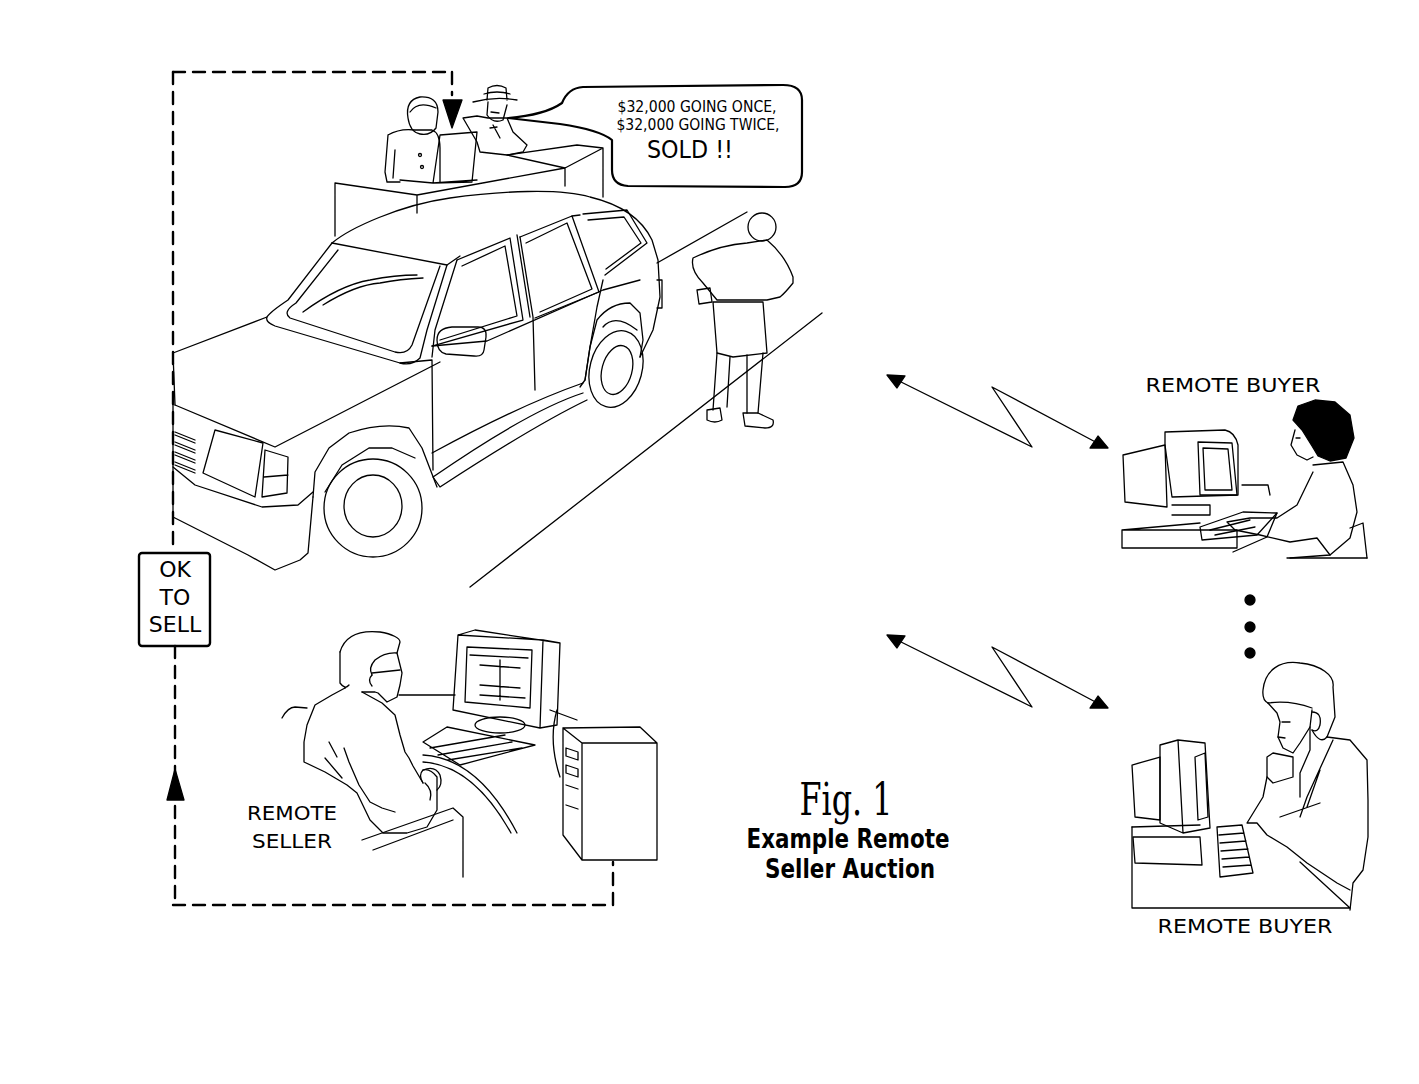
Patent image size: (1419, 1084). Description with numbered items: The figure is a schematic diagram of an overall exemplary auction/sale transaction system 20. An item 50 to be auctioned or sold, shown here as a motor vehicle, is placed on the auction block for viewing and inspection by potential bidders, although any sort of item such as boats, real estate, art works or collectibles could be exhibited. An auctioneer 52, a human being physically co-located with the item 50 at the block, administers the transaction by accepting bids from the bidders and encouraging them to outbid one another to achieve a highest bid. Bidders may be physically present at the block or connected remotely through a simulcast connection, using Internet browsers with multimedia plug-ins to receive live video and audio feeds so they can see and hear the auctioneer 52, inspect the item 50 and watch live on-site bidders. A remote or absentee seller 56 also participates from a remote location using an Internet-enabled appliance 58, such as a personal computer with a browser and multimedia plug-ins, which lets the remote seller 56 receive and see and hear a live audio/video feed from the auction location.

The auction/sale transaction system 20 is at (935, 137).
The item 50 is at (480, 467).
The auctioneer 52 is at (507, 93).
The remote seller 56 is at (313, 710).
The appliance 58 is at (562, 688).